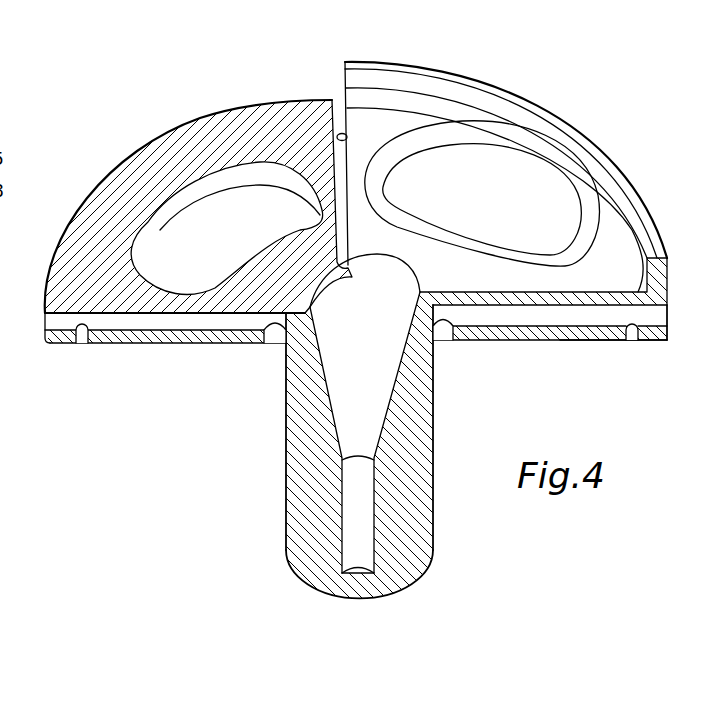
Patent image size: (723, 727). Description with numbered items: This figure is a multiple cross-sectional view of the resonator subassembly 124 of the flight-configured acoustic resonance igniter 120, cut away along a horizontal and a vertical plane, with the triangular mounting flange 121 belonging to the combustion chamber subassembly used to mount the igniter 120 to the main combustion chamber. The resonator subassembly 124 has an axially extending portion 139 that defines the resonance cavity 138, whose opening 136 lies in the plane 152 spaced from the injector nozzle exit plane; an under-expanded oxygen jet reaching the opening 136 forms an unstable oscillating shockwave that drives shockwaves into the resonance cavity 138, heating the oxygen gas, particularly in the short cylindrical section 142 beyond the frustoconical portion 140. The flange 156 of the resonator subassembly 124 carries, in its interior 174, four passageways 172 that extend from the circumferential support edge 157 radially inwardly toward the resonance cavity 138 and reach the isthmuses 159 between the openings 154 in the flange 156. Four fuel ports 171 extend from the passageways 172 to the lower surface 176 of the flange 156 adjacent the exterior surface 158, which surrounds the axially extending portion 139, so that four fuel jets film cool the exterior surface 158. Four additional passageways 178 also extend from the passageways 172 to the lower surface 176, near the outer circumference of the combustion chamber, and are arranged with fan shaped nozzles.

The acoustic resonance igniter 120 is at (0, 105).
The triangular mounting flange 121 is at (0, 519).
The resonator subassembly 124 is at (582, 116).
The opening of the resonance cavity 136 is at (370, 258).
The resonance cavity 138 is at (397, 397).
The axially extending portion 139 is at (287, 508).
The frustoconical portion 140 is at (332, 438).
The short cylindrical section 142 is at (377, 542).
The plane of the resonance cavity opening 152 is at (383, 135).
The openings in the flange 154 is at (158, 228).
The flange of the resonator subassembly 156 is at (573, 342).
The circumferential support edge 157 is at (667, 334).
The exterior surface 158 is at (434, 494).
The isthmuses 159 is at (232, 165).
The fuel ports 171 is at (322, 238).
The passageways 172 is at (314, 107).
The interior of the flange 174 is at (82, 310).
The lower surface of the flange 176 is at (108, 345).
The additional passageways 178 is at (340, 134).